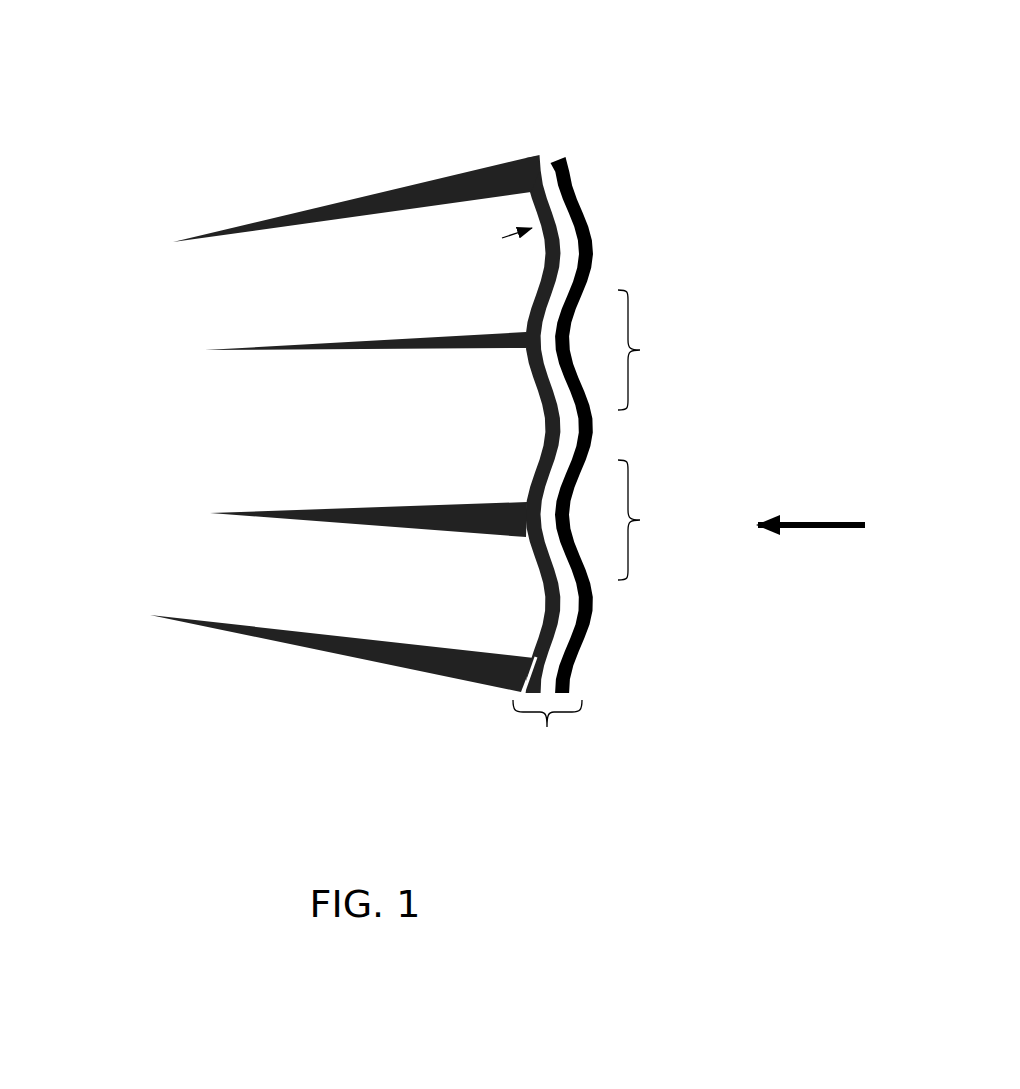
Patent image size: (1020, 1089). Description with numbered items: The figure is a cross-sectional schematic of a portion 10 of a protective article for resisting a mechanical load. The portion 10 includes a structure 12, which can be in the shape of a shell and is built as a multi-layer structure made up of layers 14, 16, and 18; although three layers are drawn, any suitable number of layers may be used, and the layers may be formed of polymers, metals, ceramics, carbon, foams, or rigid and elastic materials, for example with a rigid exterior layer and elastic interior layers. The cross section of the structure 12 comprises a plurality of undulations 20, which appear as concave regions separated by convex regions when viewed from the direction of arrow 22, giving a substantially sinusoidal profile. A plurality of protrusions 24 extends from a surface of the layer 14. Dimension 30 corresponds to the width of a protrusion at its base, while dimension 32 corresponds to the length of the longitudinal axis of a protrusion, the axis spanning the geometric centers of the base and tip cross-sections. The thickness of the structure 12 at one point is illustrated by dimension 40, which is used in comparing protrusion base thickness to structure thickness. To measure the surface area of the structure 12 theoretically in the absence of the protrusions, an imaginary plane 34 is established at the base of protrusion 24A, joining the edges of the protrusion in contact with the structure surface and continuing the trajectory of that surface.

The portion of a protective article 10 is at (84, 166).
The structure 12 is at (547, 733).
The layer 14 is at (532, 156).
The layer 16 is at (542, 158).
The layer 18 is at (557, 158).
The undulations 20 is at (648, 435).
The arrow 22 is at (811, 508).
The protrusions 24 is at (302, 212).
The protrusion 24A is at (283, 631).
The dimension 30 is at (519, 387).
The dimension 32 is at (217, 493).
The imaginary plane 34 is at (535, 660).
The dimension 40 is at (591, 204).